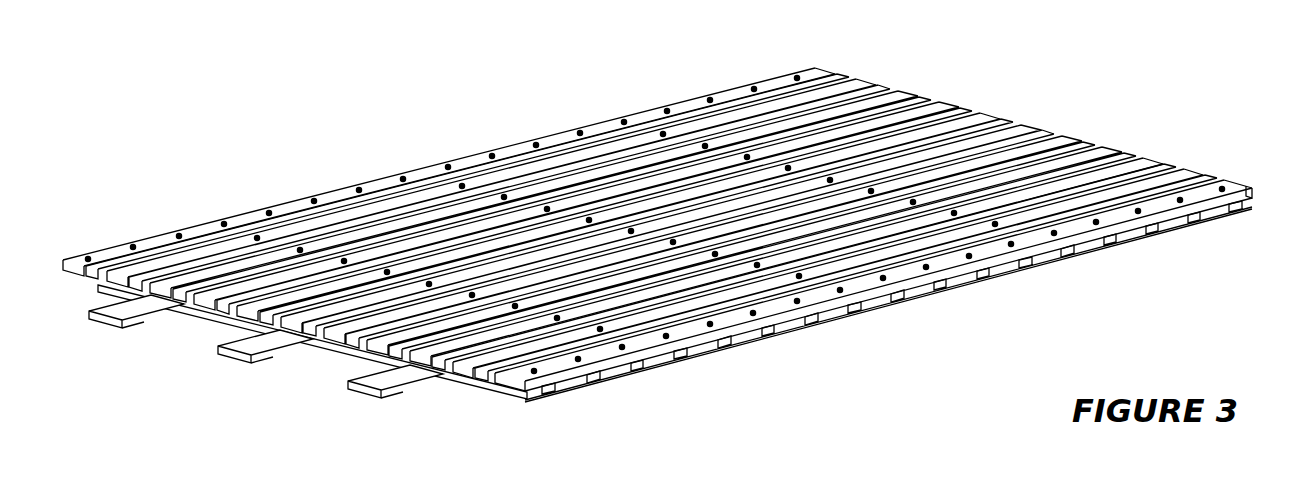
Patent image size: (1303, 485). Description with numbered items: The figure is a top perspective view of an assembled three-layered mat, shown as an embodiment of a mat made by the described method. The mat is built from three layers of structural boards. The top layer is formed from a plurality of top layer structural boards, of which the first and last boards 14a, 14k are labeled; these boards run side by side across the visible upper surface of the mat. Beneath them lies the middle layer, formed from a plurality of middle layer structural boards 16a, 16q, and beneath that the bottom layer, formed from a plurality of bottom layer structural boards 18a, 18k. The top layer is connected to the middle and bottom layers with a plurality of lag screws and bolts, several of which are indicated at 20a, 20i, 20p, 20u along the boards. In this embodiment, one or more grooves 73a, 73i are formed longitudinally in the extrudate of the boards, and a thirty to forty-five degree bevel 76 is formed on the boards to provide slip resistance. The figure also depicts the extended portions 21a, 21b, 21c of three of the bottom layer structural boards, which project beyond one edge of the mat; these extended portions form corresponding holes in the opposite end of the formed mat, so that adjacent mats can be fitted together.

The top layer structural board 14a is at (426, 179).
The top layer structural board 14k is at (872, 296).
The groove 73a is at (845, 82).
The groove 73i is at (1200, 178).
The bottom layer structural board 18a is at (75, 281).
The bottom layer structural board 18k is at (500, 394).
The lag screw and bolt 20a is at (82, 258).
The lag screw and bolt 20i is at (347, 185).
The lag screw and bolt 20p is at (650, 103).
The lag screw and bolt 20u is at (787, 66).
The middle layer structural board 16a is at (560, 388).
The middle layer structural board 16q is at (1245, 200).
The bevel 76 is at (1250, 195).
The extended portion 21a is at (100, 320).
The extended portion 21b is at (232, 356).
The extended portion 21c is at (362, 390).